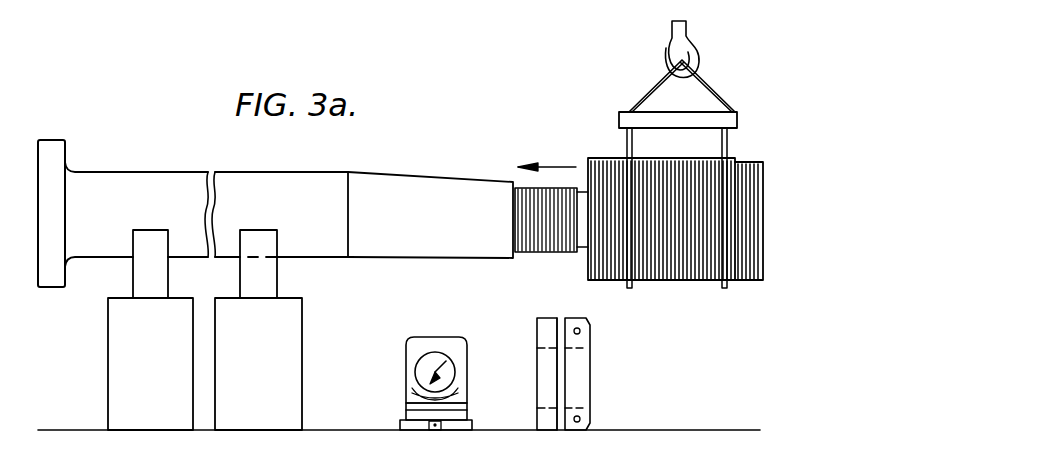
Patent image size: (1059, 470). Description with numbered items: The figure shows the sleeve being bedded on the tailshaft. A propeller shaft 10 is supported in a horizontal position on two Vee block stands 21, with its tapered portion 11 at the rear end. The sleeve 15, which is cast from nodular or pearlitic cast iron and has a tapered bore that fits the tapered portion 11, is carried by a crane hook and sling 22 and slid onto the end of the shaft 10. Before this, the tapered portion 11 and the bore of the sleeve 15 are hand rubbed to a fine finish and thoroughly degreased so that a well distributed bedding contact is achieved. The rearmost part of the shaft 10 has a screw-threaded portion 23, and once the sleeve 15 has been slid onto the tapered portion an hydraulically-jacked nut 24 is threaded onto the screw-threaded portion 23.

The propeller shaft 10 is at (318, 221).
The tapered portion 11 is at (445, 188).
The sleeve 15 is at (702, 281).
The Vee block stands 21 is at (112, 310).
The crane hook and sling 22 is at (672, 121).
The screw-threaded portion 23 is at (554, 252).
The hydraulically-jacked nut 24 is at (578, 373).